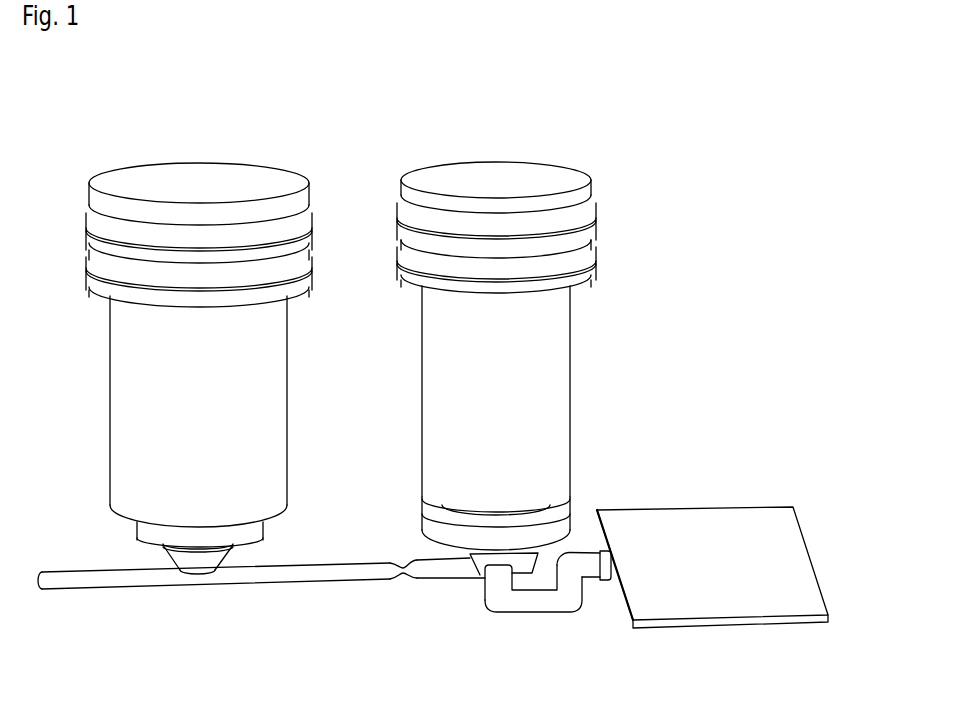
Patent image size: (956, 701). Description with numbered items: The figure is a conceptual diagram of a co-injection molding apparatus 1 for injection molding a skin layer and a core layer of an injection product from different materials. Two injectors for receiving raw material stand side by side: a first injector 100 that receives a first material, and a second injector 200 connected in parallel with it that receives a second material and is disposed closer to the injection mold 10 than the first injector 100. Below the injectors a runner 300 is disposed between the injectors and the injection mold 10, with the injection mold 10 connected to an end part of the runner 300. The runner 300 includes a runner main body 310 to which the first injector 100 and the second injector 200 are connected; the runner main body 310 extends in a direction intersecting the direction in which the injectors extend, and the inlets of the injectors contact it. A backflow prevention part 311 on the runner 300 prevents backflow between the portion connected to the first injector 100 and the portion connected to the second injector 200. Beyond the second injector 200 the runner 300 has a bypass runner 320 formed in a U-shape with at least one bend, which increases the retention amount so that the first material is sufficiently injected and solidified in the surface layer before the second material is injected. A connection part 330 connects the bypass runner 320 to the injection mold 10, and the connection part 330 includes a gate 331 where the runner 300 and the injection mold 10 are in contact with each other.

The co-injection molding apparatus 1 is at (746, 148).
The injection mold 10 is at (762, 506).
The first injector 100 is at (193, 168).
The second injector 200 is at (500, 168).
The runner 300 is at (321, 582).
The runner main body 310 is at (243, 582).
The backflow prevention part 311 is at (403, 575).
The bypass runner 320 is at (535, 613).
The connection part 330 is at (598, 550).
The gate 331 is at (612, 582).